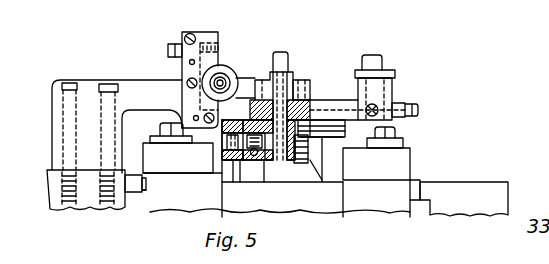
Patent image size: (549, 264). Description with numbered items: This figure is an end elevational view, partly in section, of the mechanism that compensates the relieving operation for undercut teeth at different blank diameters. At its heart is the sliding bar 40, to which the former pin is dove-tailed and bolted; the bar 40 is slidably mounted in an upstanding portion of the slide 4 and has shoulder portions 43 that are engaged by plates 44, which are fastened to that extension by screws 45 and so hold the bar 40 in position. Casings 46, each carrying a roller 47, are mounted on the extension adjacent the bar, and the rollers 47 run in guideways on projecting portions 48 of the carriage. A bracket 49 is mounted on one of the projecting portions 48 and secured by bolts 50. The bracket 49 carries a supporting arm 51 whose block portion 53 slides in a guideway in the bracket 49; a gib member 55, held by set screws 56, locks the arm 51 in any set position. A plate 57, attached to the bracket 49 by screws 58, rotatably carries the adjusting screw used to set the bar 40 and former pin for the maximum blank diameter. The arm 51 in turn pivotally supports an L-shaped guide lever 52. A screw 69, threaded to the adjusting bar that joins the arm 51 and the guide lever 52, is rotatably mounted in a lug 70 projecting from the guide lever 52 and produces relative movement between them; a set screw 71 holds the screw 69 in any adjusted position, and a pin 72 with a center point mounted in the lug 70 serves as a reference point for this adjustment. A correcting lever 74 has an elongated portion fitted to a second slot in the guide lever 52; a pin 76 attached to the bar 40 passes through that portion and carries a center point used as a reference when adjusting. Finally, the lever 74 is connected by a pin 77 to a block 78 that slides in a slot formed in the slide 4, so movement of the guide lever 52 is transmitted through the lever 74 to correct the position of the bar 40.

The slide 4 is at (400, 183).
The sliding bar 40 is at (266, 182).
The shoulder portions 43 is at (303, 153).
The plates 44 is at (313, 128).
The screws 45 is at (320, 182).
The casings 46 is at (143, 150).
The rollers 47 is at (140, 192).
The projecting portions 48 is at (50, 168).
The bracket 49 is at (52, 128).
The bolts 50 is at (65, 103).
The supporting arm 51 is at (308, 100).
The guide lever 52 is at (245, 78).
The block portion 53 is at (215, 62).
The gib member 55 is at (226, 65).
The set screws 56 is at (170, 46).
The plate 57 is at (213, 32).
The screws 58 is at (190, 34).
The screw 69 is at (318, 108).
The lug 70 is at (390, 85).
The set screw 71 is at (378, 108).
The pin 72 is at (375, 55).
The correcting lever 74 is at (213, 135).
The pin 76 is at (290, 73).
The pin 77 is at (220, 132).
The block 78 is at (248, 157).